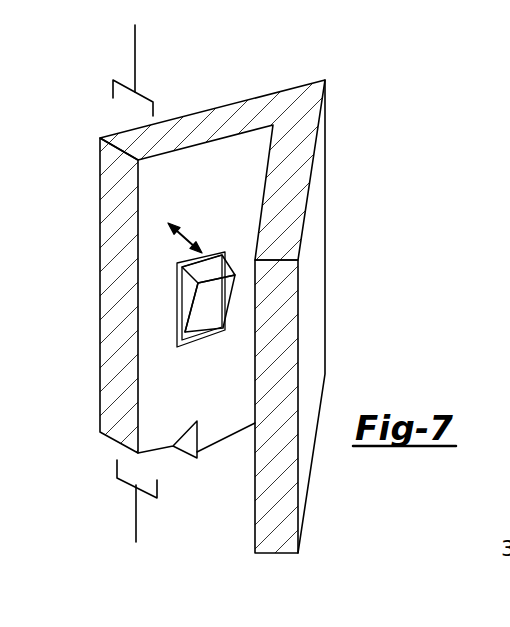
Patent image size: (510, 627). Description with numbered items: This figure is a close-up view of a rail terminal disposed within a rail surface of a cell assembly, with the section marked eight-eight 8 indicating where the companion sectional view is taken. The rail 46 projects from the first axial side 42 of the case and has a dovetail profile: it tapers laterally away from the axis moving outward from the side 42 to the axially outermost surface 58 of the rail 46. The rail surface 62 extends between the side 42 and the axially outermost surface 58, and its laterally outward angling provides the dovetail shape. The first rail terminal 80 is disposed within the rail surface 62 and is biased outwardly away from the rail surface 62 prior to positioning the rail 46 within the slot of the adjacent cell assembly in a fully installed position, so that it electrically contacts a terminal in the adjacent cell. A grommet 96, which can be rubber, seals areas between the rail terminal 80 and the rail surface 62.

The section line 8- 8 is at (152, 38).
The first axial side 42 is at (313, 339).
The rail 46 is at (117, 140).
The axially outermost surface 58 is at (100, 187).
The rail surface 62 is at (219, 415).
The first rail terminal 80 is at (206, 316).
The grommet 96 is at (178, 304).